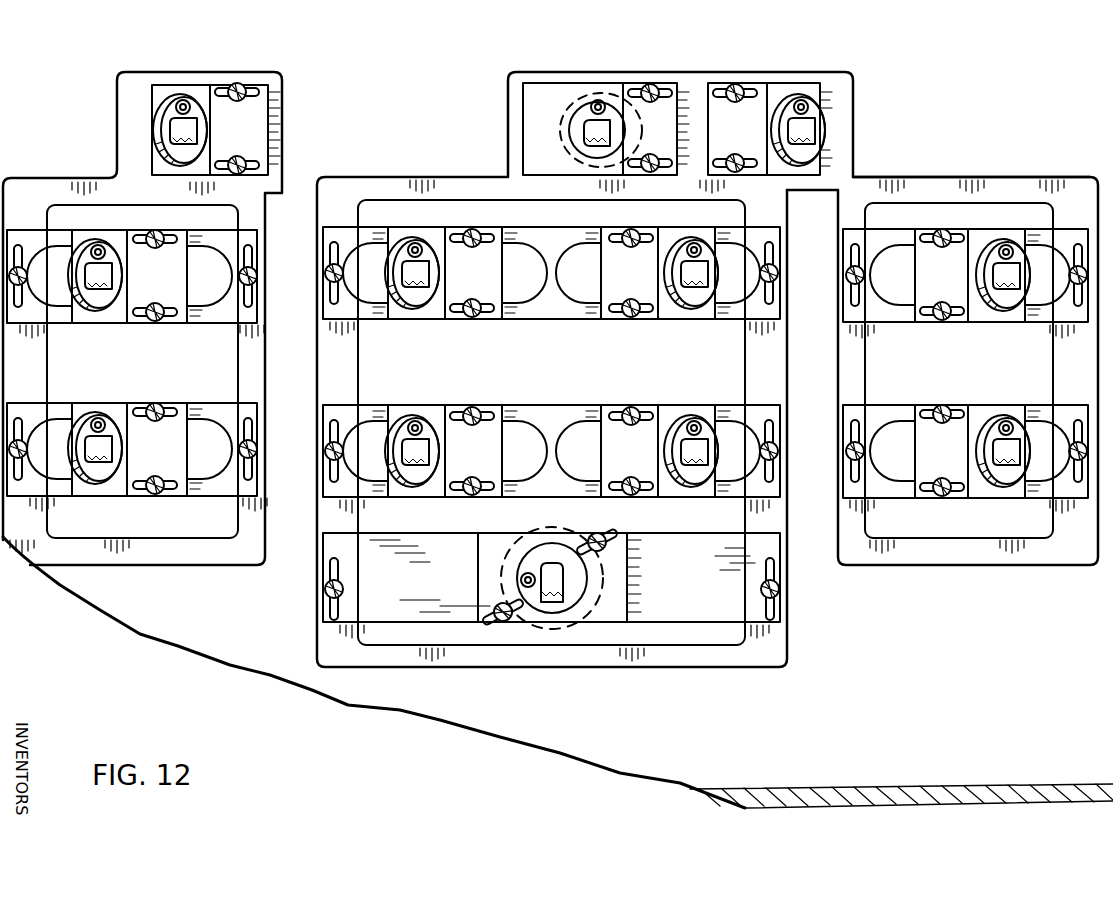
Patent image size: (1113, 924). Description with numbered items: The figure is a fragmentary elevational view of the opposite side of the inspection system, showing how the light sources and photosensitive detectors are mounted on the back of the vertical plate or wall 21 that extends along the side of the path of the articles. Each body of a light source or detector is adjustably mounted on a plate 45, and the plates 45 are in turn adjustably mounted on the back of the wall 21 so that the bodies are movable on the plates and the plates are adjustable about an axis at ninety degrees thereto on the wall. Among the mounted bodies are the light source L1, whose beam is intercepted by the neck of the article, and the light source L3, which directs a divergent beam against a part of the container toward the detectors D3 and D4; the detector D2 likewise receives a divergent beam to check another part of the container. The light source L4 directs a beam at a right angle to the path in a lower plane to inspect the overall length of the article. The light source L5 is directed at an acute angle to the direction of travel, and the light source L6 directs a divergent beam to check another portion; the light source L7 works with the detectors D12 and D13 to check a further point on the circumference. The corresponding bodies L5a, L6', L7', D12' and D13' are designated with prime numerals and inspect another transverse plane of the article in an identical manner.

The photoelectric detector D2 is at (194, 84).
The photoelectric detector D3 is at (216, 106).
The photoelectric detector D12 is at (95, 259).
The photoelectric detector D13 is at (132, 264).
The photoelectric detector D12' is at (95, 429).
The photoelectric detector D13' is at (132, 434).
The light source L7 is at (412, 257).
The light source L6 is at (691, 257).
The light source L7' is at (412, 431).
The light source L6' is at (691, 431).
The light source L1 is at (598, 95).
The light source L3 is at (802, 93).
The light source L5 is at (1001, 243).
The light source L5a is at (1005, 416).
The light source L4 is at (588, 569).
The plate 45 is at (888, 235).
The vertical plate 21 is at (457, 717).